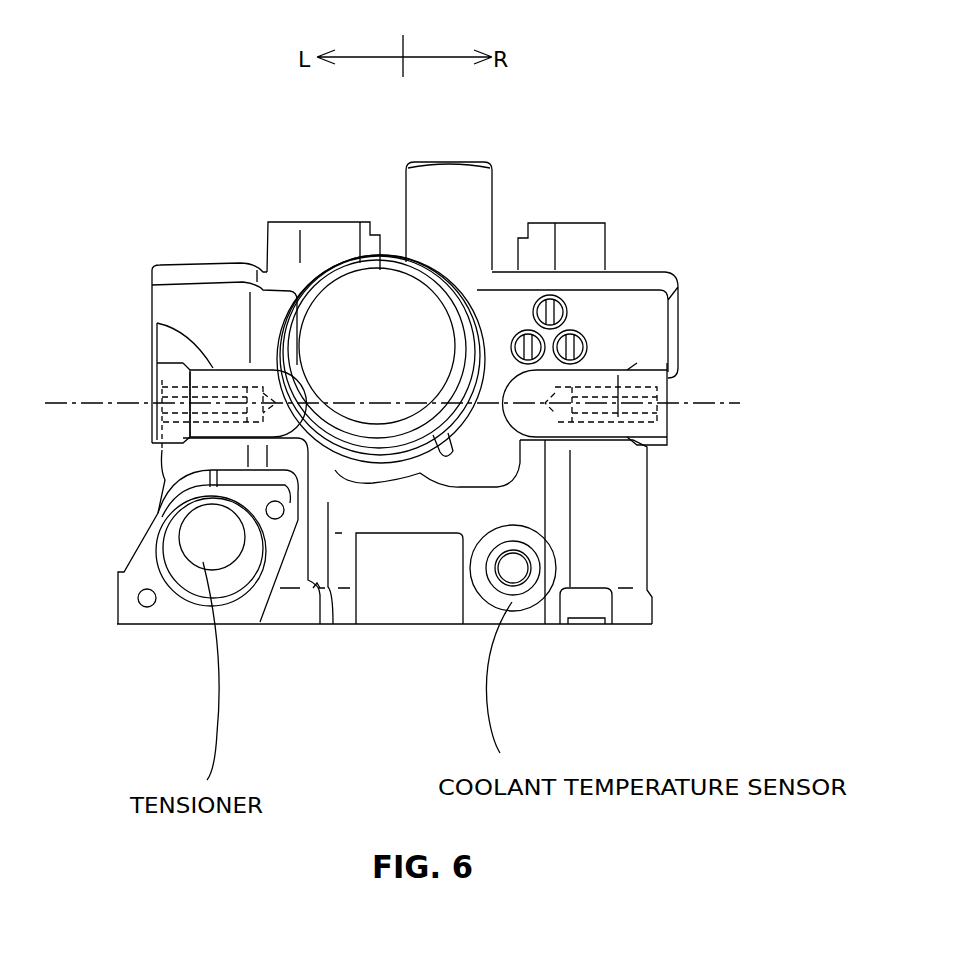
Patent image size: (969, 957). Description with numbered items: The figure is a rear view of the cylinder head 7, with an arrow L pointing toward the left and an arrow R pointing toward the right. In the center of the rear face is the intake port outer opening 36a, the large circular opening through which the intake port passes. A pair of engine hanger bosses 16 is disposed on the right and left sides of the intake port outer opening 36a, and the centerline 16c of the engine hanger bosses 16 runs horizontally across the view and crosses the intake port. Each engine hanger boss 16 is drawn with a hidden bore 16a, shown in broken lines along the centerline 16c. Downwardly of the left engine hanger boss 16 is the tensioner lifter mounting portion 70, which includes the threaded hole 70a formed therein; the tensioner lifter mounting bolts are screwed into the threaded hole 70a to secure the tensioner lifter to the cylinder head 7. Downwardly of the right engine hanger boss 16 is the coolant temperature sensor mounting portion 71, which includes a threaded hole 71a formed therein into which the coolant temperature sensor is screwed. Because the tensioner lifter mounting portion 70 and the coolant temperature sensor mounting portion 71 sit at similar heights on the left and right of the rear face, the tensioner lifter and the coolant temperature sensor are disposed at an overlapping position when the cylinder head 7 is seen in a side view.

The cylinder head 7 is at (180, 172).
The intake port outer opening 36a is at (353, 300).
The engine hanger boss 16 is at (213, 368).
The bolt hole 16a is at (197, 388).
The centerline of the engine hanger bosses 16c is at (718, 406).
The tensioner lifter mounting portion 70 is at (185, 612).
The threaded hole 70a is at (147, 598).
The coolant temperature sensor mounting portion 71 is at (522, 602).
The threaded hole 71a is at (513, 568).